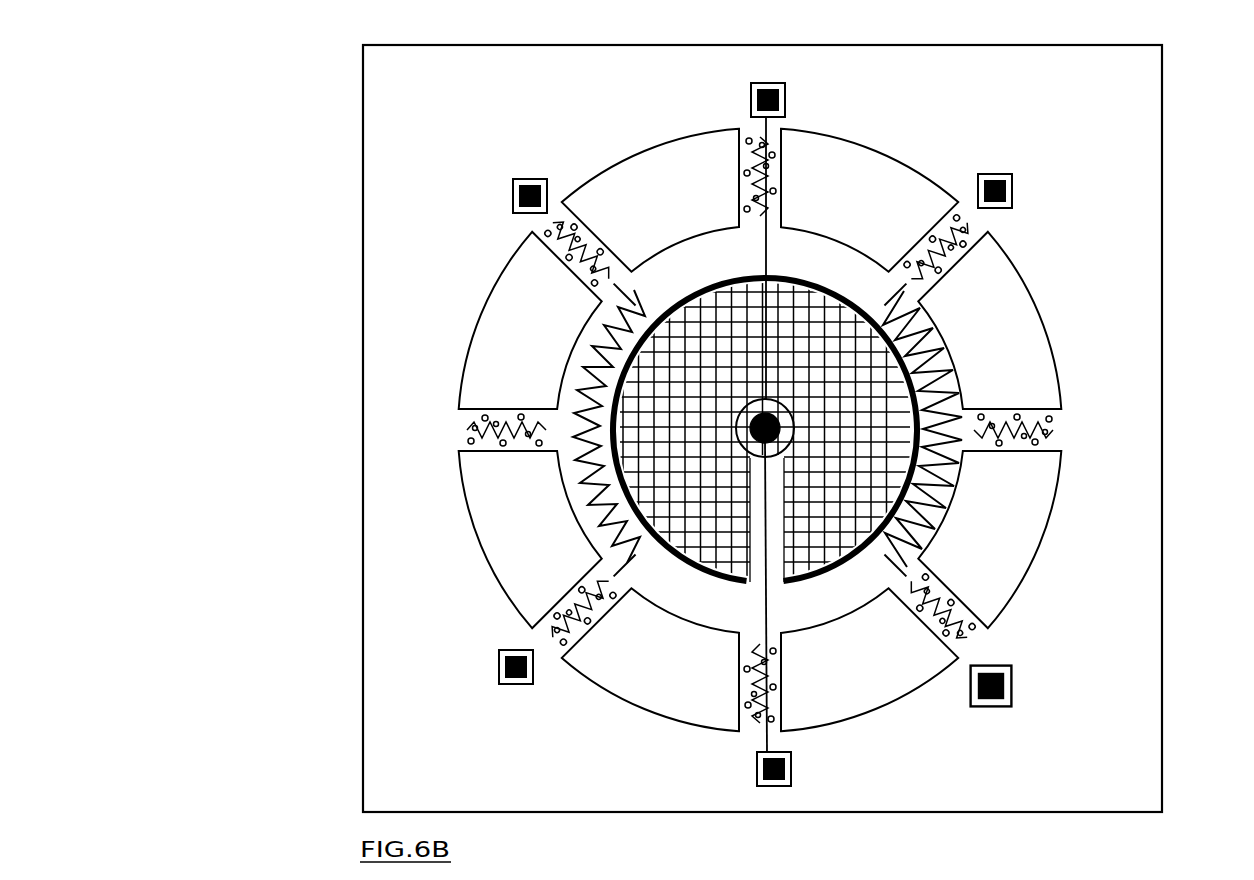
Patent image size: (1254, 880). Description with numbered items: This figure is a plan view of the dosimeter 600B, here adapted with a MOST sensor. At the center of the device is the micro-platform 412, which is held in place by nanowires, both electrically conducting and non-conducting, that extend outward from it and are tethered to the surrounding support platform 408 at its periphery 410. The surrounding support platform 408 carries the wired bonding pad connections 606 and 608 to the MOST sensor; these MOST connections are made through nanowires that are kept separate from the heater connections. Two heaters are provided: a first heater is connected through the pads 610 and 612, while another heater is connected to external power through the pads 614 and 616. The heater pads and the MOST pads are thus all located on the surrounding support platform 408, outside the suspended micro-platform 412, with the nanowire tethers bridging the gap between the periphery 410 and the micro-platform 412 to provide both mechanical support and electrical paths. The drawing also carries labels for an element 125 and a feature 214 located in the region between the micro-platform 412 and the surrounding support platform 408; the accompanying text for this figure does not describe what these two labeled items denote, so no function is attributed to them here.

The vertical Hall sensor device 600B is at (278, 39).
The surrounding support platform 408 is at (451, 137).
The periphery 410 is at (512, 258).
The micro-platform 412 is at (700, 230).
The ring segment 125 is at (880, 201).
The interconnect channel 214 is at (950, 587).
The wired bonding pad connection 606 is at (760, 84).
The wired bonding pad connection 608 is at (775, 805).
The pad 610 is at (512, 193).
The pad 612 is at (498, 667).
The pad 614 is at (1013, 189).
The pad 616 is at (1012, 680).